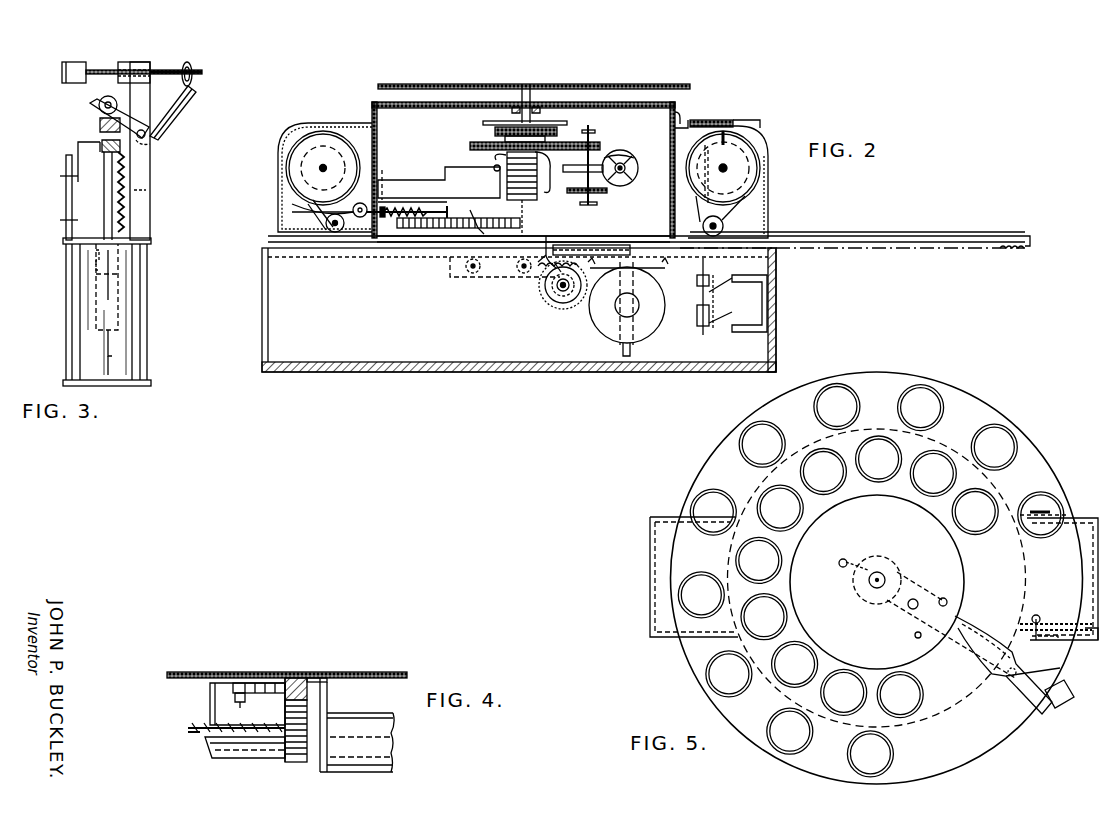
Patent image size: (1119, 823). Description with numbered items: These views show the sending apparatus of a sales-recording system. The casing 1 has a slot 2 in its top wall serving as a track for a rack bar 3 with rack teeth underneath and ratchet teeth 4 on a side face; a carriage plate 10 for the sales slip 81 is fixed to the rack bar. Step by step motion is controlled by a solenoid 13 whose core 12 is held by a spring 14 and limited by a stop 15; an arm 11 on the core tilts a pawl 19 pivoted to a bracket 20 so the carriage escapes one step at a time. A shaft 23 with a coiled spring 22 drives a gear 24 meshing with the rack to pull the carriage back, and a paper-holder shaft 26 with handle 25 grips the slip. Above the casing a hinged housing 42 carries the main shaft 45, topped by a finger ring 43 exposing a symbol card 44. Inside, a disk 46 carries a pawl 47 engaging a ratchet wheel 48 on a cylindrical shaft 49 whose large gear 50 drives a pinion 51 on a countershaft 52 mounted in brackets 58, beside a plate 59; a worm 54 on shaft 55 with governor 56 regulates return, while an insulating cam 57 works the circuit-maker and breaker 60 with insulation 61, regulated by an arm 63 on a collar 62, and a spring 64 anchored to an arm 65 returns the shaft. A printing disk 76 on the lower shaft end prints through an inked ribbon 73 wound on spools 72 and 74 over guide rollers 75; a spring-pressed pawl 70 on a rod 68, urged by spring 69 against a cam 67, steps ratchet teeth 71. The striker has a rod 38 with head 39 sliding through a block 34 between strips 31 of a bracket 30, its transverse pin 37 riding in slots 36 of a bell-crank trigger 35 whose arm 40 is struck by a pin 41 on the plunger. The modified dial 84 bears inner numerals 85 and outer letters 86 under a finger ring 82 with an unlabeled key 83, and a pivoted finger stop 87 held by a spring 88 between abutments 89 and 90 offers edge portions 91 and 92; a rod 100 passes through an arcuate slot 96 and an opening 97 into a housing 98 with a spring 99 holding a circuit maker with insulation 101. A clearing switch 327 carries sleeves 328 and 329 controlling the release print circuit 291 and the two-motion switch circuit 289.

In FIG. 2, the casing 1 is at (262, 356).
In FIG. 4, the slot 2 is at (308, 679).
In FIG. 2, the rack bar 3 is at (892, 250).
In FIG. 4, the rack bar 3 is at (300, 678).
In FIG. 4, the ratchet teeth 4 is at (286, 674).
In FIG. 2, the carriage plate 10 is at (846, 236).
In FIG. 4, the carriage plate 10 is at (360, 672).
In FIG. 3, the arm 11 is at (76, 156).
In FIG. 4, the arm 11 is at (216, 688).
In FIG. 3, the core 12 is at (104, 262).
In FIG. 4, the core 12 is at (264, 752).
In FIG. 3, the solenoid 13 is at (126, 298).
In FIG. 2, the solenoid 13 is at (612, 330).
In FIG. 4, the solenoid 13 is at (366, 716).
In FIG. 3, the spring 14 is at (124, 176).
In FIG. 3, the stop 15 is at (112, 354).
In FIG. 4, the pawl 19 is at (254, 683).
In FIG. 2, the bracket 20 is at (552, 268).
In FIG. 4, the bracket 20 is at (246, 702).
In FIG. 2, the spring 22 is at (548, 288).
In FIG. 4, the spring 22 is at (196, 734).
In FIG. 2, the shaft 23 is at (560, 294).
In FIG. 4, the shaft 23 is at (192, 724).
In FIG. 2, the gear 24 is at (564, 298).
In FIG. 4, the gear 24 is at (308, 710).
In FIG. 2, the handle 25 is at (544, 256).
In FIG. 2, the shaft 26 is at (550, 268).
In FIG. 3, the bracket 30 is at (152, 144).
In FIG. 3, the strips 31 is at (142, 191).
In FIG. 3, the block 34 is at (146, 62).
In FIG. 3, the bell-crank trigger 35 is at (176, 112).
In FIG. 3, the slots 36 is at (193, 80).
In FIG. 3, the transverse pin 37 is at (191, 66).
In FIG. 3, the striker rod 38 is at (172, 70).
In FIG. 3, the head 39 is at (72, 83).
In FIG. 3, the arm 40 is at (92, 106).
In FIG. 3, the pin 41 is at (112, 106).
In FIG. 2, the housing 42 is at (372, 118).
In FIG. 2, the finger ring 43 is at (676, 86).
In FIG. 2, the card 44 is at (390, 102).
In FIG. 5, the card 44 is at (936, 462).
In FIG. 2, the main shaft 45 is at (528, 97).
In FIG. 5, the main shaft 45 is at (876, 580).
In FIG. 2, the disk 46 is at (490, 122).
In FIG. 2, the pawl 47 is at (566, 125).
In FIG. 2, the ratchet wheel 48 is at (518, 127).
In FIG. 2, the cylindrical shaft 49 is at (506, 138).
In FIG. 2, the large gear 50 is at (469, 146).
In FIG. 2, the pinion 51 is at (591, 137).
In FIG. 2, the countershaft 52 is at (600, 203).
In FIG. 2, the worm 54 is at (634, 157).
In FIG. 2, the shaft 55 is at (640, 168).
In FIG. 2, the governor 56 is at (624, 150).
In FIG. 2, the cam 57 is at (574, 189).
In FIG. 2, the brackets 58 is at (672, 118).
In FIG. 2, the plate 59 is at (734, 120).
In FIG. 2, the circuit-maker and breaker 60 is at (476, 192).
In FIG. 2, the insulation 61 is at (495, 168).
In FIG. 2, the collar 62 is at (504, 156).
In FIG. 2, the arm 63 is at (507, 172).
In FIG. 2, the spring 64 is at (458, 270).
In FIG. 2, the arm 65 is at (522, 220).
In FIG. 2, the cam 67 is at (438, 240).
In FIG. 2, the rod 68 is at (420, 208).
In FIG. 2, the spring 69 is at (386, 208).
In FIG. 2, the spring-pressed pawl 70 is at (312, 230).
In FIG. 2, the ratchet teeth 71 is at (318, 202).
In FIG. 2, the spool 72 is at (284, 168).
In FIG. 2, the inked ribbon 73 is at (726, 224).
In FIG. 2, the spool 74 is at (742, 174).
In FIG. 2, the guide rollers 75 is at (332, 232).
In FIG. 2, the printing disk 76 is at (414, 238).
In FIG. 2, the sales slip 81 is at (894, 233).
In FIG. 5, the finger ring 82 is at (988, 399).
In FIG. 5, the letter key 83 is at (924, 398).
In FIG. 5, the dial 84 is at (988, 507).
In FIG. 5, the numerals 85 is at (878, 446).
In FIG. 5, the letters 86 is at (840, 402).
In FIG. 5, the finger stop 87 is at (1060, 700).
In FIG. 5, the spring 88 is at (846, 560).
In FIG. 5, the abutment 89 is at (942, 598).
In FIG. 5, the abutment 90 is at (914, 635).
In FIG. 5, the finger engaging edge portion 91 is at (1060, 672).
In FIG. 5, the finger engaging edge portion 92 is at (996, 640).
In FIG. 5, the arcuate slot 96 is at (1012, 678).
In FIG. 5, the opening 97 is at (1038, 614).
In FIG. 2, the housing 98 is at (738, 141).
In FIG. 5, the housing 98 is at (1088, 518).
In FIG. 5, the spring 99 is at (1064, 622).
In FIG. 5, the rod 100 is at (1032, 640).
In FIG. 5, the insulation 101 is at (1090, 638).
In FIG. 2, the two-motion switch circuit 289 is at (728, 320).
In FIG. 2, the release print circuit 291 is at (734, 286).
In FIG. 2, the switch 327 is at (752, 121).
In FIG. 2, the metal sleeve 328 is at (696, 280).
In FIG. 2, the metal sleeve 329 is at (696, 320).